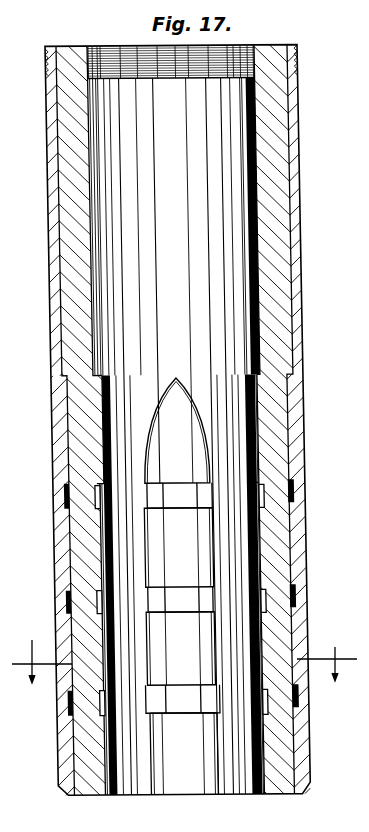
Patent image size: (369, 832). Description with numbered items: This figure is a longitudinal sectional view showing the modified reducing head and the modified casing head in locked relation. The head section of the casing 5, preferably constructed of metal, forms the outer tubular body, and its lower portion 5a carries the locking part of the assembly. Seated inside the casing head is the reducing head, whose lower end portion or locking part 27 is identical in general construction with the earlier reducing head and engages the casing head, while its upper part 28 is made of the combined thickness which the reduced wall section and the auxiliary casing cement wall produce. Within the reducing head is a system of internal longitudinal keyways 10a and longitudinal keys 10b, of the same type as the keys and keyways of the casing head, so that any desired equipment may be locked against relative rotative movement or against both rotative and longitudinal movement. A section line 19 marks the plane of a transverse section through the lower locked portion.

The head section of the casing 5 is at (52, 277).
The slotted lower portion of barrel 5a is at (305, 526).
The upper part of the reducing head 28 is at (278, 322).
The lower end portion or locking part 27 is at (272, 440).
The internal longitudinal keyways 10a is at (228, 565).
The longitudinal keys 10b is at (190, 638).
The section line 19- 19 is at (184, 677).